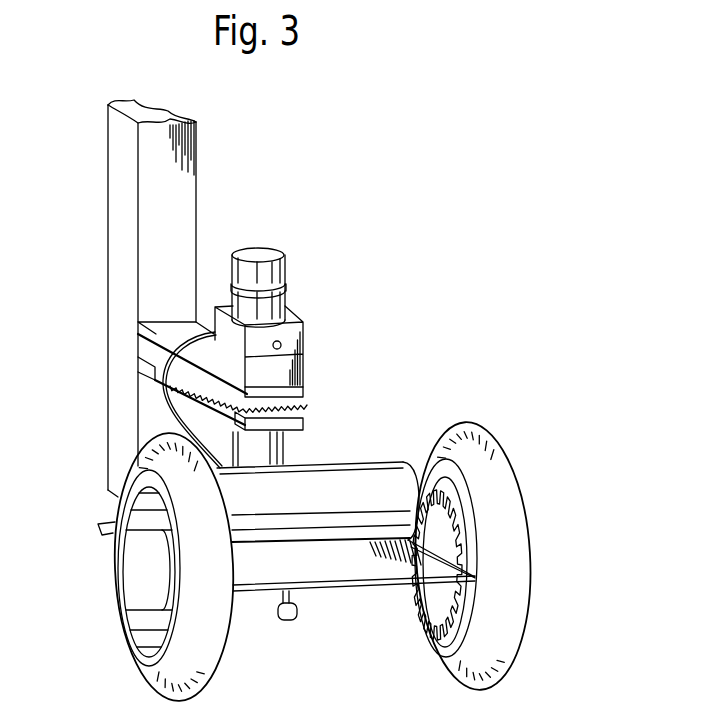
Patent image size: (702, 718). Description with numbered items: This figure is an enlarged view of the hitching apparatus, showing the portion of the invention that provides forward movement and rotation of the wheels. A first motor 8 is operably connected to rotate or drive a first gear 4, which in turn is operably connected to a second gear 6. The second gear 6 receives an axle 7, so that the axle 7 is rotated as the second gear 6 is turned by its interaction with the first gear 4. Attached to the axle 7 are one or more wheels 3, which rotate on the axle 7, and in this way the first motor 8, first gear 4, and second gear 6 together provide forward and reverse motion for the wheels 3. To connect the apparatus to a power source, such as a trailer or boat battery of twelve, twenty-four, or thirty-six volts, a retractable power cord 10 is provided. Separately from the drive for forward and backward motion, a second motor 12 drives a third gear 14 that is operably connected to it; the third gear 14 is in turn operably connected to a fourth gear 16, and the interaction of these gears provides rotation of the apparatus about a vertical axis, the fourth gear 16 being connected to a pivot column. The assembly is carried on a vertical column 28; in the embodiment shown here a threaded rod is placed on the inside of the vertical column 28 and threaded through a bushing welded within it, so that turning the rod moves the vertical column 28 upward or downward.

The wheel 3 is at (520, 507).
The first gear 4 is at (466, 536).
The second gear 6 is at (423, 643).
The axle 7 is at (462, 630).
The first motor 8 is at (343, 497).
The retractable power cord 10 is at (290, 595).
The second motor 12 is at (287, 300).
The third gear 14 is at (173, 412).
The fourth gear 16 is at (165, 352).
The vertical column 28 is at (150, 223).